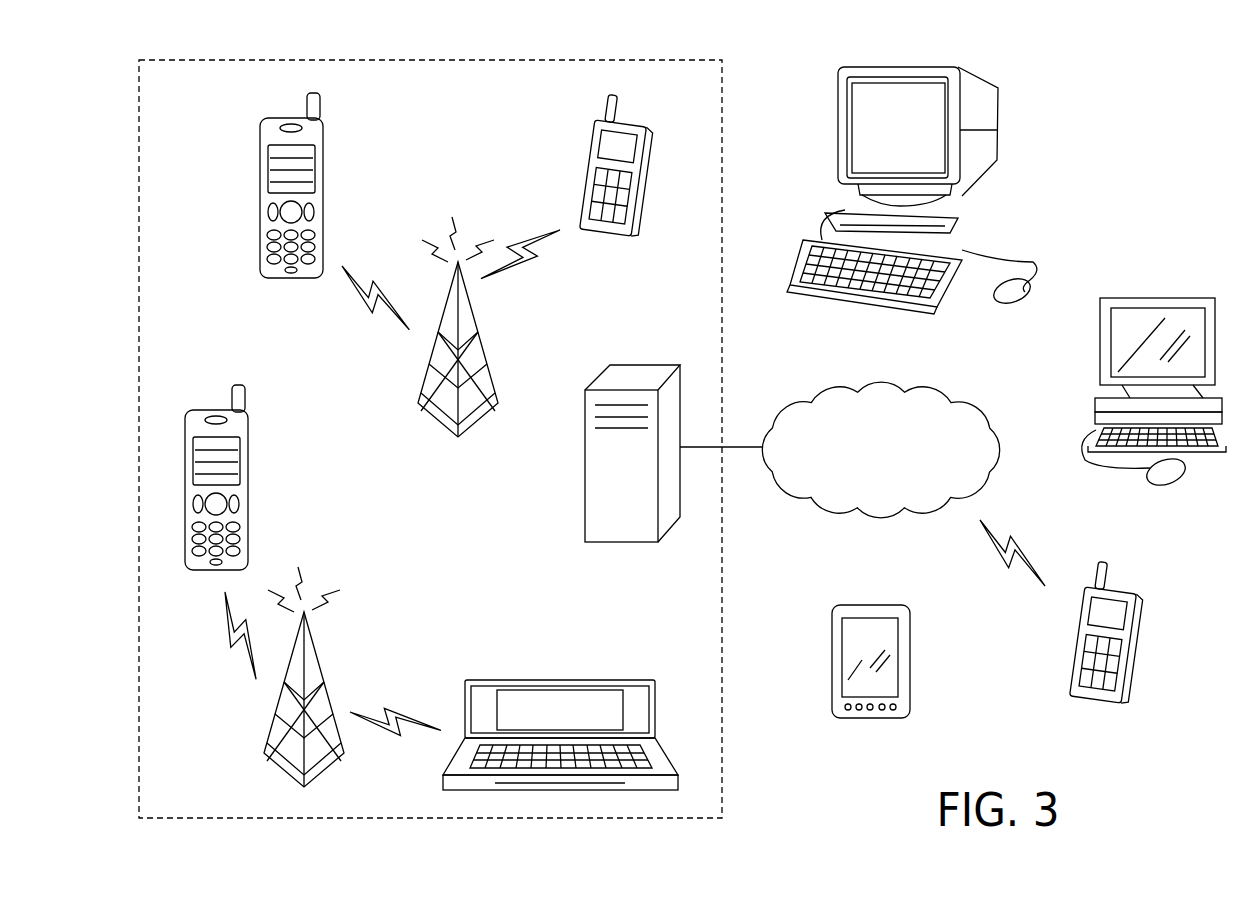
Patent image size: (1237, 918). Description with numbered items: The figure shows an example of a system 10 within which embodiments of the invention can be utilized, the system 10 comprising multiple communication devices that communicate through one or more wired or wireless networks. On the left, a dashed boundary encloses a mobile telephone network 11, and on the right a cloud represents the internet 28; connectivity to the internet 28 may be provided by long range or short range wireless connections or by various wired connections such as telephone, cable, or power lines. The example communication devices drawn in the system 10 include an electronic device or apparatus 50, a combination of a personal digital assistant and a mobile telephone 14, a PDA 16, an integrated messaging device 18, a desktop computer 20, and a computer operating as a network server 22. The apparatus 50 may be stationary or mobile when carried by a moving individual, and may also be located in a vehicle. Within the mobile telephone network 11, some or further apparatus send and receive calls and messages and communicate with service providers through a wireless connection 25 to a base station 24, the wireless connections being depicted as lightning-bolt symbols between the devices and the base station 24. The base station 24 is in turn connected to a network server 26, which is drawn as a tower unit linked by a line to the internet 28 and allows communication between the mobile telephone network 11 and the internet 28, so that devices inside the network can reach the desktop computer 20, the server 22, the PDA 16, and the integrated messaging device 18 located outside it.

The system 10 is at (1204, 551).
The mobile telephone network 11 is at (184, 104).
The combination of a personal digital assistant and a mobile telephone 14 is at (547, 680).
The PDA 16 is at (912, 658).
The integrated messaging device 18 is at (584, 180).
The desktop computer 20 is at (1000, 128).
The computer operating as a network server 22 is at (1157, 298).
The base station 24 is at (480, 330).
The wireless connection 25 is at (240, 650).
The network server 26 is at (585, 458).
The internet 28 is at (798, 394).
The electronic device or apparatus 50 is at (323, 195).